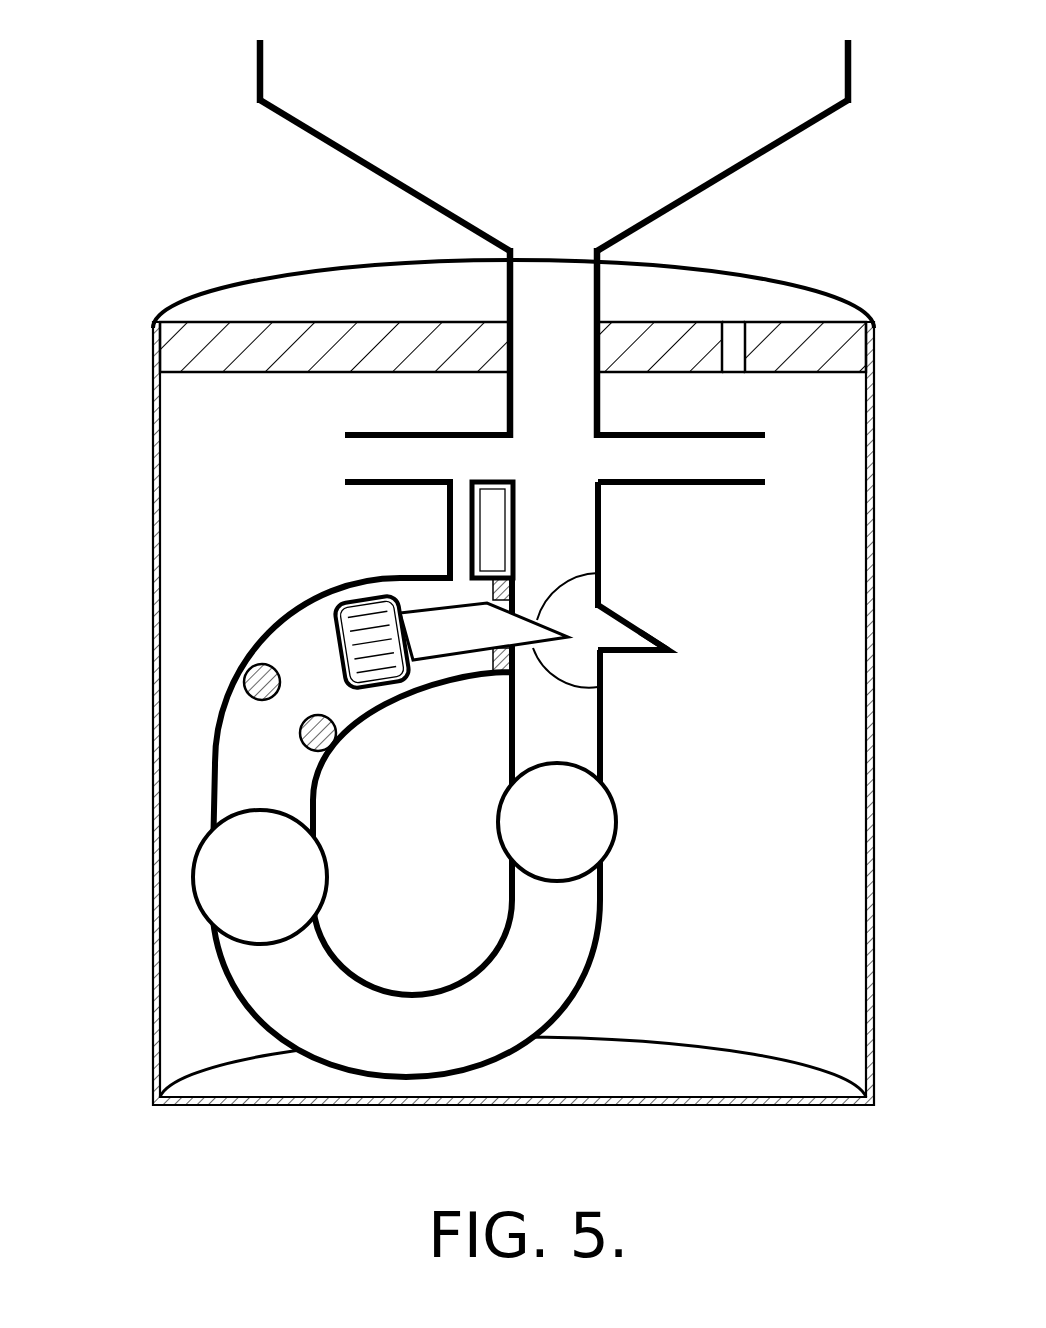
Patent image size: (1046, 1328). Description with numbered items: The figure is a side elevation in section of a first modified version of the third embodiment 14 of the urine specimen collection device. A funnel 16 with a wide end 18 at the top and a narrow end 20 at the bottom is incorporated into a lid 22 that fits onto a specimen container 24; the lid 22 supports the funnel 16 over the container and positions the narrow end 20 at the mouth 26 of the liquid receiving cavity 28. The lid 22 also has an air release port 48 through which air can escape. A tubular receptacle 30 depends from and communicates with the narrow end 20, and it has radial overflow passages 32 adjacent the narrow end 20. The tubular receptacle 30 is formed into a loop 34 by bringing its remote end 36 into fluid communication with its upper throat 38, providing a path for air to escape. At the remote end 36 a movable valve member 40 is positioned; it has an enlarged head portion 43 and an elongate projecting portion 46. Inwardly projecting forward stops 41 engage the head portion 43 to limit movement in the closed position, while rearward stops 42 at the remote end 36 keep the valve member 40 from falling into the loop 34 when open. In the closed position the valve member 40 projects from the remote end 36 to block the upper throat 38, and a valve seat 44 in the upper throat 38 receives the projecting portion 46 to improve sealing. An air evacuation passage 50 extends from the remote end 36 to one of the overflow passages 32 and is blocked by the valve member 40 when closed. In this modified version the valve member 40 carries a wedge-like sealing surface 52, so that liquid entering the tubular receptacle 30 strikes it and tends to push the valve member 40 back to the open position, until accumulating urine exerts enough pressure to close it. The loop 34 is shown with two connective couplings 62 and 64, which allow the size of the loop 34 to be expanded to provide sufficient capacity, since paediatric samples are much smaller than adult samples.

The third embodiment 14 is at (277, 250).
The funnel 16 is at (695, 187).
The wide end 18 is at (840, 46).
The narrow end 20 is at (504, 290).
The lid 22 is at (215, 338).
The specimen container 24 is at (152, 762).
The mouth 26 is at (162, 378).
The liquid receiving cavity 28 is at (715, 953).
The tubular receptacle 30 is at (600, 537).
The radial overflow passages 32 is at (407, 433).
The loop 34 is at (217, 688).
The remote end 36 is at (383, 580).
The upper throat 38 is at (605, 600).
The valve member 40 is at (420, 665).
The forward stops 41 is at (510, 592).
The rearward stops 42 is at (246, 670).
The enlarged head portion 43 is at (352, 636).
The valve seat 44 is at (650, 640).
The projecting portion 46 is at (600, 687).
The air release port 48 is at (733, 332).
The air evacuation passage 50 is at (448, 540).
The wedge-like sealing surface 52 is at (600, 573).
The connective coupling 62 is at (312, 868).
The connective coupling 64 is at (592, 820).